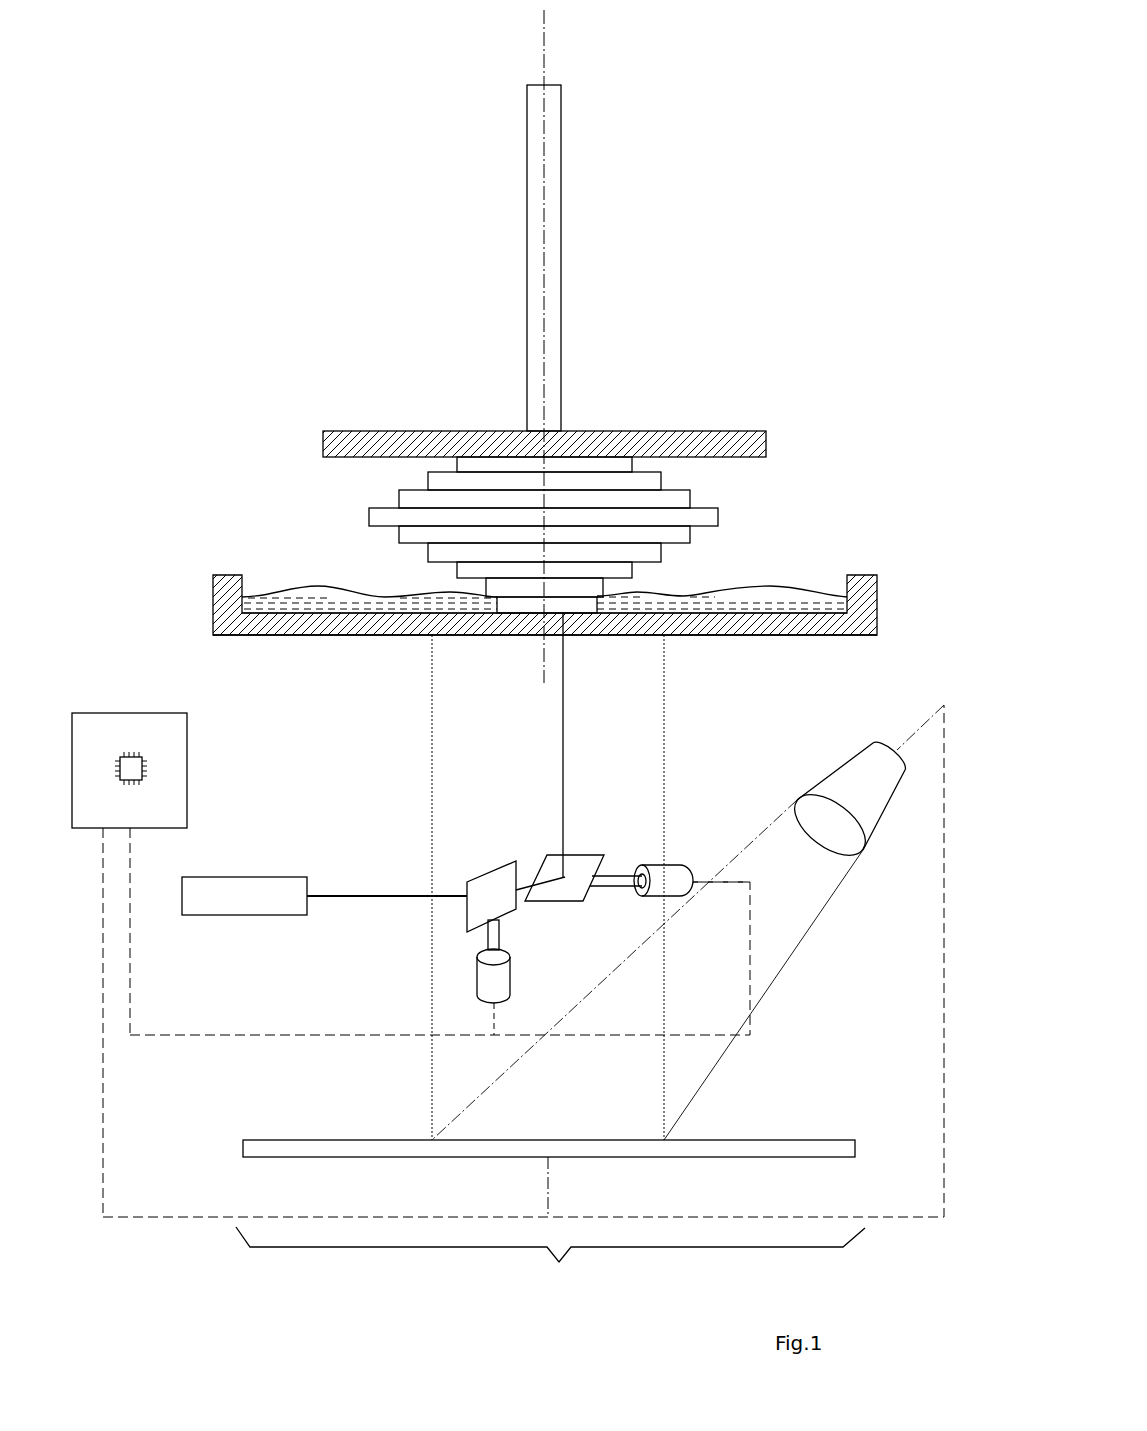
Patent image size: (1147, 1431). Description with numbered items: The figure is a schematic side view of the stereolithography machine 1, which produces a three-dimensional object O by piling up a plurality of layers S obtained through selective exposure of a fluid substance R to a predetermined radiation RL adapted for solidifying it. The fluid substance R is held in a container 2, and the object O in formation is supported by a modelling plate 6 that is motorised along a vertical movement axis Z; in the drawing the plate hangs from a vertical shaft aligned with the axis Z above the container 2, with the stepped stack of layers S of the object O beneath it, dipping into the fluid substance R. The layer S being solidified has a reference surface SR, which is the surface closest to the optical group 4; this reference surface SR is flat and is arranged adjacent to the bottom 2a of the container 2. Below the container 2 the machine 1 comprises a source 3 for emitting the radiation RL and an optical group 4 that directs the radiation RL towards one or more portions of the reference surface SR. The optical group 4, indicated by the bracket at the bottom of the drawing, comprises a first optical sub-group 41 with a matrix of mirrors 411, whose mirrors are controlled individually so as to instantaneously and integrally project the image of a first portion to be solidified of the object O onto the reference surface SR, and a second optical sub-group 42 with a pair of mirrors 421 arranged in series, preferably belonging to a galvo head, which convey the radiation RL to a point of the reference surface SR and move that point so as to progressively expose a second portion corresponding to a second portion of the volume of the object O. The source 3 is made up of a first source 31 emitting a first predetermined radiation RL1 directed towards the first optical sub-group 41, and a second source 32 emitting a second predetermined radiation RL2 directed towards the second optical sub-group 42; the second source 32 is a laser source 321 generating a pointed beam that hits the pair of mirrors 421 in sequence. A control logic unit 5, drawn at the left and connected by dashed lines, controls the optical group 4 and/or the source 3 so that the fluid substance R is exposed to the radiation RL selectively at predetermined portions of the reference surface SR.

The stereolithography machine 1 is at (700, 247).
The container 2 is at (880, 605).
The bottom of the container 2a is at (806, 637).
The source 3 is at (579, 847).
The first source 31 is at (842, 768).
The second source 32 is at (275, 917).
The laser source 321 is at (240, 890).
The optical group 4 is at (523, 1000).
The first optical sub-group 41 is at (592, 1128).
The matrix of mirrors 411 is at (290, 1140).
The second optical sub-group 42 is at (622, 843).
The pair of mirrors 421 is at (582, 850).
The control logic unit 5 is at (120, 680).
The modelling plate 6 is at (743, 430).
The vertical movement axis Z is at (547, 38).
The three-dimensional object O is at (455, 503).
The layer S is at (357, 512).
The reference surface SR is at (713, 613).
The fluid substance R is at (777, 600).
The predetermined radiation RL is at (417, 843).
The first predetermined radiation RL1 is at (803, 884).
The second predetermined radiation RL2 is at (387, 897).